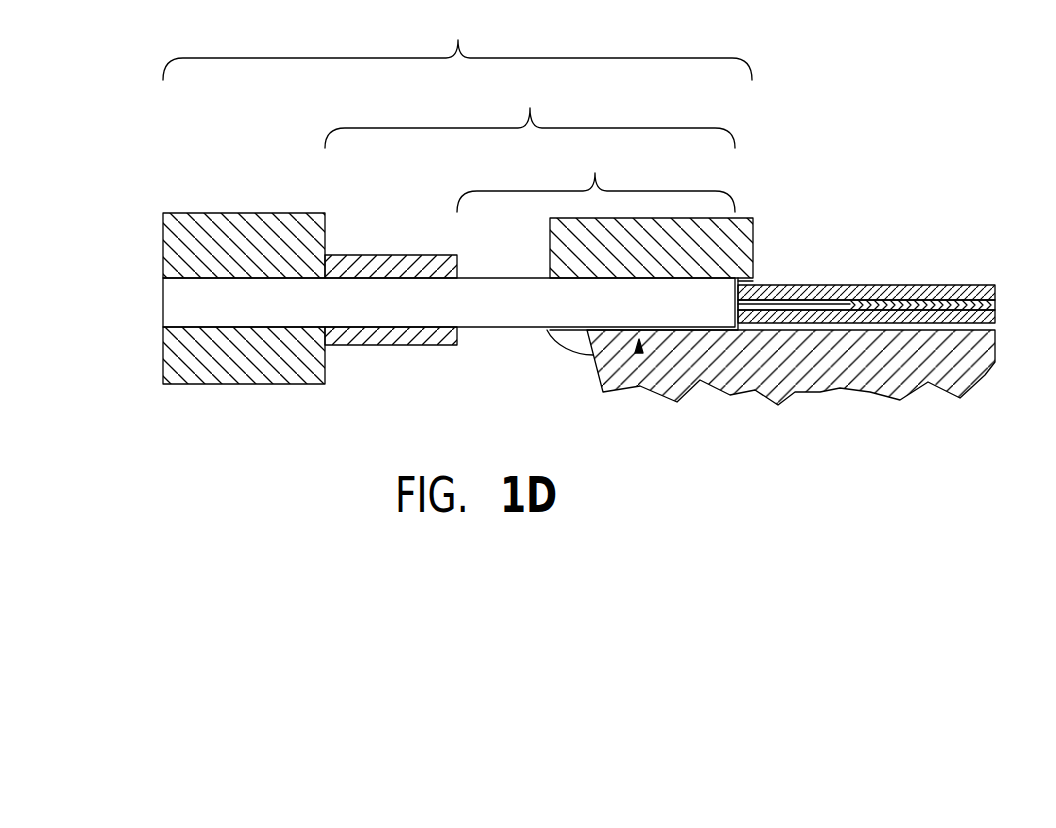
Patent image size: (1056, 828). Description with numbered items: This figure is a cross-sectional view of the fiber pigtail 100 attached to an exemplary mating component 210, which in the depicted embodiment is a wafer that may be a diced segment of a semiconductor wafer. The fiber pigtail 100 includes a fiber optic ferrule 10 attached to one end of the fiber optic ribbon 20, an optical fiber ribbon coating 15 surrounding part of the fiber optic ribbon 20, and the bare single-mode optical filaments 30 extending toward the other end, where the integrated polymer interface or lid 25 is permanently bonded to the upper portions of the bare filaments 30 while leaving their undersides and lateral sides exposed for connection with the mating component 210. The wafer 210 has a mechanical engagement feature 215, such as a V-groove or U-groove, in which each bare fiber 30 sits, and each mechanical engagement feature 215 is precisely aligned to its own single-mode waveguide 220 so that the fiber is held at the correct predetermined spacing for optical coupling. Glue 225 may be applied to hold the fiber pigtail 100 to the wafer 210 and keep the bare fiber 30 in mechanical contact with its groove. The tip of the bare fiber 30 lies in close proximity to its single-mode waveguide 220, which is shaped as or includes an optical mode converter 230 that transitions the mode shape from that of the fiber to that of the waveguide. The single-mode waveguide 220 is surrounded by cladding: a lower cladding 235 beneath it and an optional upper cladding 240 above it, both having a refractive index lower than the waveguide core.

The fiber pigtail 100 is at (457, 43).
The fiber optic ribbon 20 is at (530, 111).
The bare single-mode optical filaments 30 is at (596, 176).
The fiber optic ferrule 10 is at (187, 372).
The optical fiber ribbon coating 15 is at (388, 338).
The fiber optic interface (integrated polymer lid) 25 is at (752, 232).
The glue 225 is at (757, 278).
The single-mode waveguide 220 is at (997, 290).
The optical mode converter 230 is at (800, 305).
The upper cladding 240 is at (965, 297).
The lower cladding 235 is at (995, 332).
The mating component (wafer) 210 is at (973, 373).
The mechanical engagement feature 215 is at (640, 355).